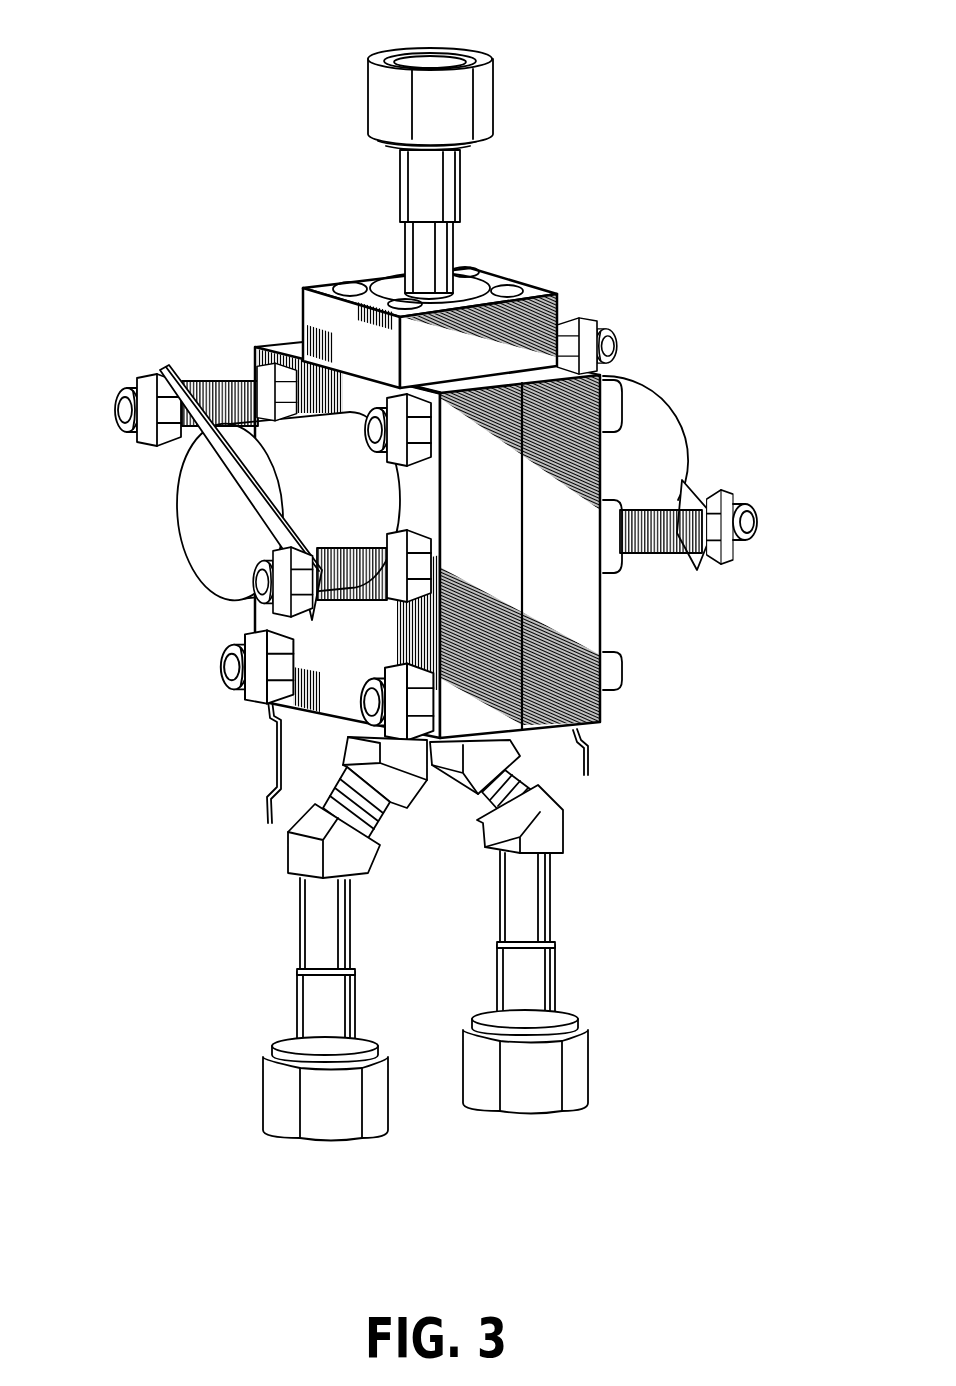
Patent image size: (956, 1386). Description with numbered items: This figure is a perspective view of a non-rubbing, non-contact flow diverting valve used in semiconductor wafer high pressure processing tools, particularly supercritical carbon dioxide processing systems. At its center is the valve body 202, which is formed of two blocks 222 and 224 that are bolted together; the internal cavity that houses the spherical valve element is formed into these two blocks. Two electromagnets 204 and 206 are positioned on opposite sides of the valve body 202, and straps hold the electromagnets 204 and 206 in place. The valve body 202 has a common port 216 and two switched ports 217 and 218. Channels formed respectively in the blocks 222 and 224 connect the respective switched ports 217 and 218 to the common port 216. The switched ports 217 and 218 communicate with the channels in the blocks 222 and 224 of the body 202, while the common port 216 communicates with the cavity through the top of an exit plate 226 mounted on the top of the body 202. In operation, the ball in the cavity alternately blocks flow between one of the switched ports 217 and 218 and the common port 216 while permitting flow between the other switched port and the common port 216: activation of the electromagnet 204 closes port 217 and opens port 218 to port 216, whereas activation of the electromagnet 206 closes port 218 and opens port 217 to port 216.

The valve body 202 is at (612, 612).
The electromagnet 204 is at (670, 432).
The electromagnet 206 is at (193, 547).
The common port 216 is at (458, 48).
The switched port 217 is at (576, 1112).
The switched port 218 is at (370, 1141).
The block 222 is at (583, 543).
The block 224 is at (500, 543).
The exit plate 226 is at (548, 310).